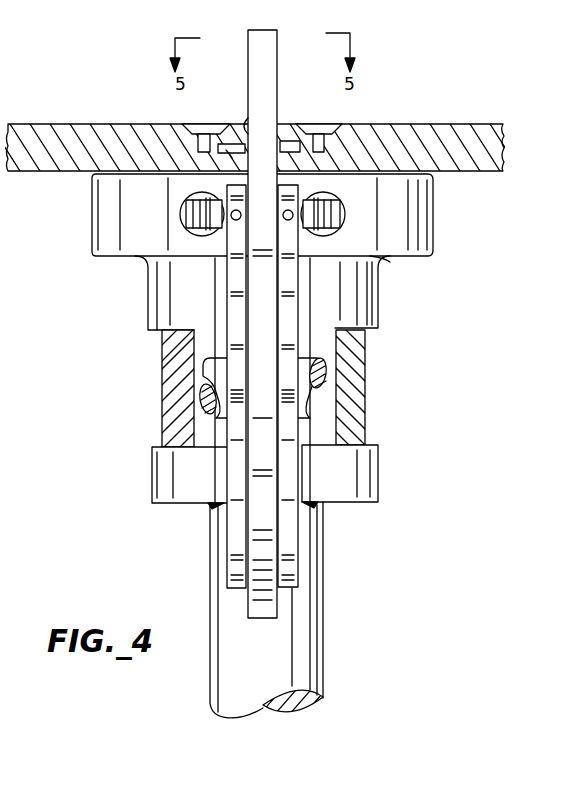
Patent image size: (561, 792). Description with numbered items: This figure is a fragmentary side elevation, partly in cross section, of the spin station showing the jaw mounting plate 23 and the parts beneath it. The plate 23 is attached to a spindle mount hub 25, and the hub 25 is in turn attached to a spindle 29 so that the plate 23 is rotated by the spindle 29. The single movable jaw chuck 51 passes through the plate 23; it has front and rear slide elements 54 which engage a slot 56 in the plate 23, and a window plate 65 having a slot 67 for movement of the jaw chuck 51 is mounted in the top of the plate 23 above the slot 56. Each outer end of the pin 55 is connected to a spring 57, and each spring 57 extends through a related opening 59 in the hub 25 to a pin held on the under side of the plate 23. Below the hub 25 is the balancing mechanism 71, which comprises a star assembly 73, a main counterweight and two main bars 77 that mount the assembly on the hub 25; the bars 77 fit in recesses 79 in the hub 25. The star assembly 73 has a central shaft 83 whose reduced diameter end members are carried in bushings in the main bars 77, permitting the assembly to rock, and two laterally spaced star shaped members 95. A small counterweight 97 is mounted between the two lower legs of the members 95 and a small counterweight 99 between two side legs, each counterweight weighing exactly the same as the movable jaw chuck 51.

The jaw mounting plate 23 is at (465, 122).
The spindle mount hub 25 is at (433, 238).
The spindle 29 is at (320, 597).
The movable jaw chuck 51 is at (263, 37).
The slide elements 54 is at (298, 125).
The pin 55 is at (335, 212).
The slot 56 is at (230, 152).
The spring 57 is at (320, 197).
The opening 59 is at (365, 256).
The window plate 65 is at (233, 122).
The slot 67 is at (288, 142).
The balancing mechanism 71 is at (158, 285).
The star assembly 73 is at (212, 322).
The main bars 77 is at (168, 418).
The recesses 79 is at (188, 436).
The central shaft 83 is at (313, 352).
The star shaped members 95 is at (228, 293).
The small counterweight 97 is at (260, 540).
The small counterweight 99 is at (260, 375).